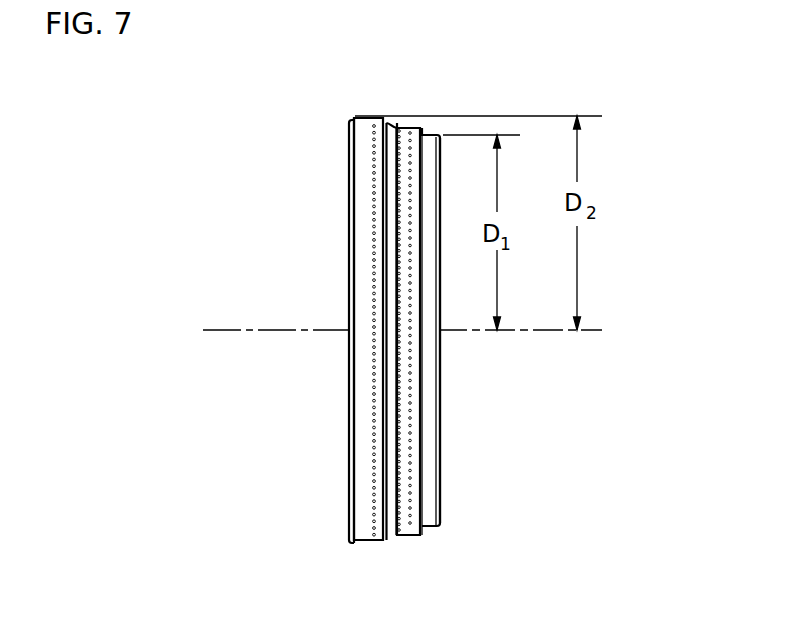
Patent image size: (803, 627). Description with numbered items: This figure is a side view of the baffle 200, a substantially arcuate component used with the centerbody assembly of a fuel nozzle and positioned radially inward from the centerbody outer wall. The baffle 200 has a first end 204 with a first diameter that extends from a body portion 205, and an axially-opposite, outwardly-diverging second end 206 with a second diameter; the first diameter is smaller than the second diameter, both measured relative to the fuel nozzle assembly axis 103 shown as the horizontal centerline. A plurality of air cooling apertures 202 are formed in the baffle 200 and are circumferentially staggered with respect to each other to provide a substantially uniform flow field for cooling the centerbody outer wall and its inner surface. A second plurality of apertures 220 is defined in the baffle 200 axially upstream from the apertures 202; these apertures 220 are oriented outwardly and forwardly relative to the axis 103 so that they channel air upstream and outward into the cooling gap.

The fuel nozzle assembly axis 103 is at (545, 331).
The baffle 200 is at (400, 92).
The air cooling apertures 202 is at (417, 526).
The first end 204 is at (441, 427).
The body portion 205 is at (394, 540).
The second end 206 is at (349, 386).
The second plurality of apertures 220 is at (374, 470).